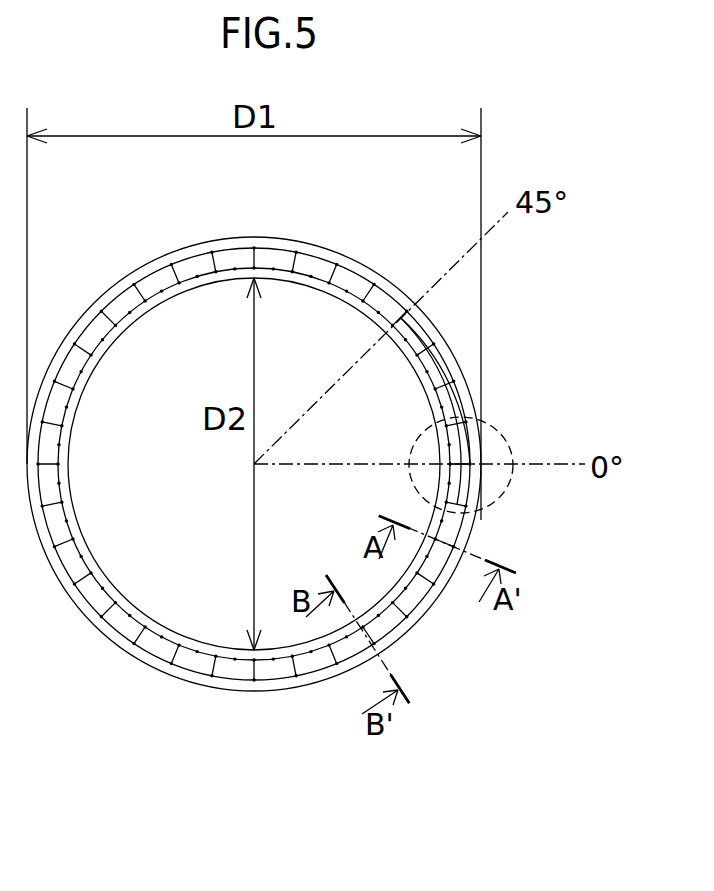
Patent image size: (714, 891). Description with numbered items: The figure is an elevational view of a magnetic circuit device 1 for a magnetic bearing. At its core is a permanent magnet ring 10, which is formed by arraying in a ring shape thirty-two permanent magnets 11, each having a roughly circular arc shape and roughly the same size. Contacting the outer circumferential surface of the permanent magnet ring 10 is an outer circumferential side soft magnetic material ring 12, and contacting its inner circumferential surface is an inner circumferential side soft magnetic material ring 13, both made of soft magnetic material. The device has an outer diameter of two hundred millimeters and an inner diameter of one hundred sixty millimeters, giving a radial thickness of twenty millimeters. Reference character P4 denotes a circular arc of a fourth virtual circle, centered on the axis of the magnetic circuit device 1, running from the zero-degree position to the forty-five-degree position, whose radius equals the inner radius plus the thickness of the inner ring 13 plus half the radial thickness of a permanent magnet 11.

The magnetic circuit device for a magnetic bearing 1 is at (290, 412).
The permanent magnet ring 10 is at (117, 294).
The permanent magnet 11 is at (364, 280).
The outer circumferential side soft magnetic material ring 12 is at (307, 246).
The inner circumferential side soft magnetic material ring 13 is at (436, 391).
The circular arc of the fourth virtual circle P4 is at (420, 304).